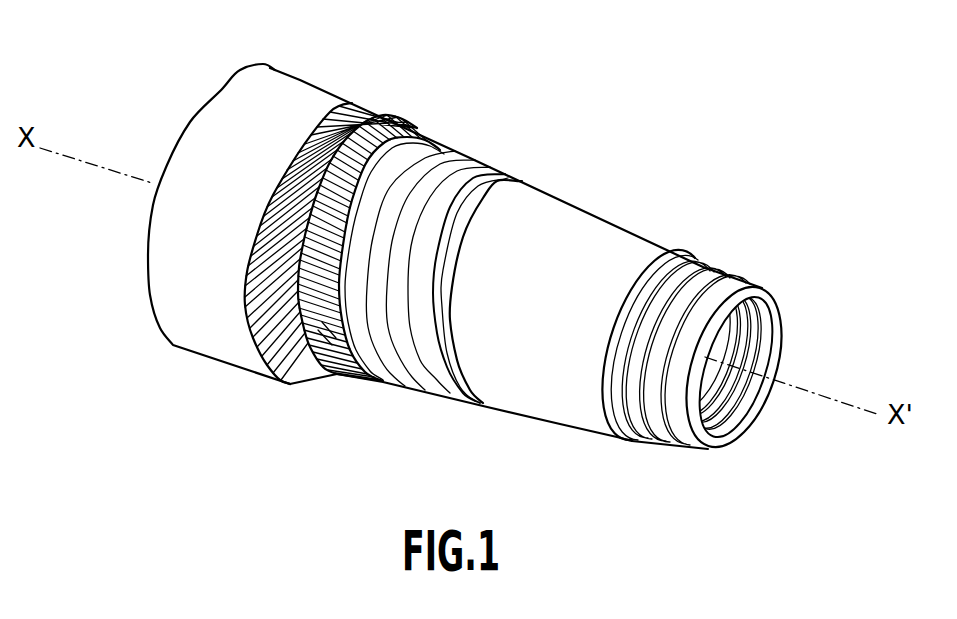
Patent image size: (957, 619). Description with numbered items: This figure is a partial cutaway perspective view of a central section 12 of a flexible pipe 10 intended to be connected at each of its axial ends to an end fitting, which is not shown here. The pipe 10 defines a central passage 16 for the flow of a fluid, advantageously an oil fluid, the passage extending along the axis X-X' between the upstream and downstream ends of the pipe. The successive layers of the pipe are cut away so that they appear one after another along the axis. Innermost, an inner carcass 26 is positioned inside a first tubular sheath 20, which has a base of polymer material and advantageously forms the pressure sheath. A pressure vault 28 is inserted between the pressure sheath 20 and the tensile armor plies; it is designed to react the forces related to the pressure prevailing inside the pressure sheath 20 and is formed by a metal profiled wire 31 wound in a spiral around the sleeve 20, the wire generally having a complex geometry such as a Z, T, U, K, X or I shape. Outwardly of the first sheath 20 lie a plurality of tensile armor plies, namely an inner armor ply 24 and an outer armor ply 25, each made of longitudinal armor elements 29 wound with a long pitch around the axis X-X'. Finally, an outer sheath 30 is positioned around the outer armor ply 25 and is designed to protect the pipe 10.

The flexible pipe 10 is at (665, 137).
The central section 12 is at (477, 148).
The central passage 16 is at (740, 338).
The first tubular sheath 20 is at (592, 254).
The inner armor ply 24 is at (392, 142).
The outer armor ply 25 is at (345, 133).
The inner carcass 26 is at (710, 300).
The pressure vault 28 is at (468, 190).
The longitudinal armor elements 29 is at (325, 330).
The outer sheath 30 is at (278, 112).
The metal profiled wire 31 is at (437, 378).